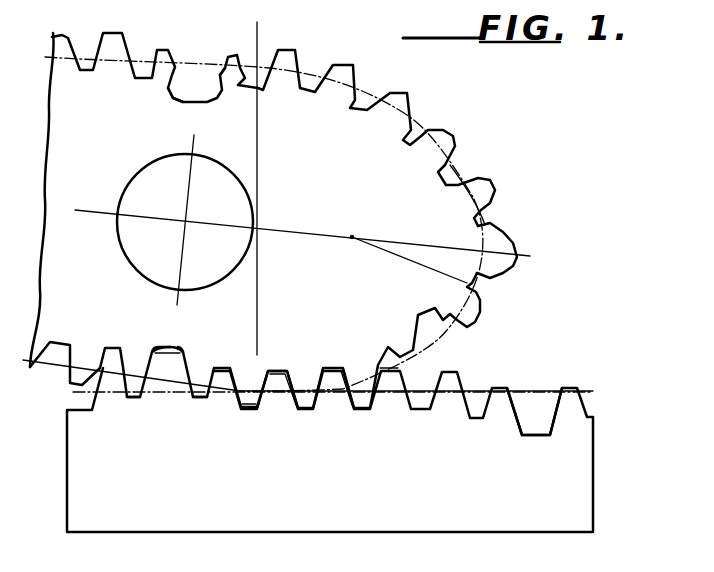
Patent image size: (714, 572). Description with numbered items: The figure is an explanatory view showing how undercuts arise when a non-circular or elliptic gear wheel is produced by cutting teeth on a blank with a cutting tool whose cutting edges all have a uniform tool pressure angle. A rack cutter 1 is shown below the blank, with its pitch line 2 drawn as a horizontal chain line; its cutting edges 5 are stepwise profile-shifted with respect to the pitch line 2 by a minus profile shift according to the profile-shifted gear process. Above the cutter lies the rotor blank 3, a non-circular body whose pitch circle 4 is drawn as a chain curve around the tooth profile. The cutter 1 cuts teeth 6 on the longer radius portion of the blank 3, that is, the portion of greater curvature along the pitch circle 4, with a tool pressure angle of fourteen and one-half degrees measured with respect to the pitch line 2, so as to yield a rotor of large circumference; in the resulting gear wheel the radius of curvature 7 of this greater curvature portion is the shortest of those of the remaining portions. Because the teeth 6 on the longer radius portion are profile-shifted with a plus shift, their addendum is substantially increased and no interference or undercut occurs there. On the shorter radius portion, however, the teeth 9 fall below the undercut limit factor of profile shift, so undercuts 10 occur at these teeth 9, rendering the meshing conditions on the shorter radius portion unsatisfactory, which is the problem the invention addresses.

The rack cutter 1 is at (447, 427).
The pitch line 2 is at (523, 390).
The rotor blank 3 is at (320, 113).
The pitch circle 4 is at (407, 130).
The cutting edges 5 is at (510, 415).
The teeth 6 is at (518, 243).
The radius of curvature 7 is at (442, 268).
The teeth 9 is at (123, 398).
The undercuts 10 is at (157, 88).